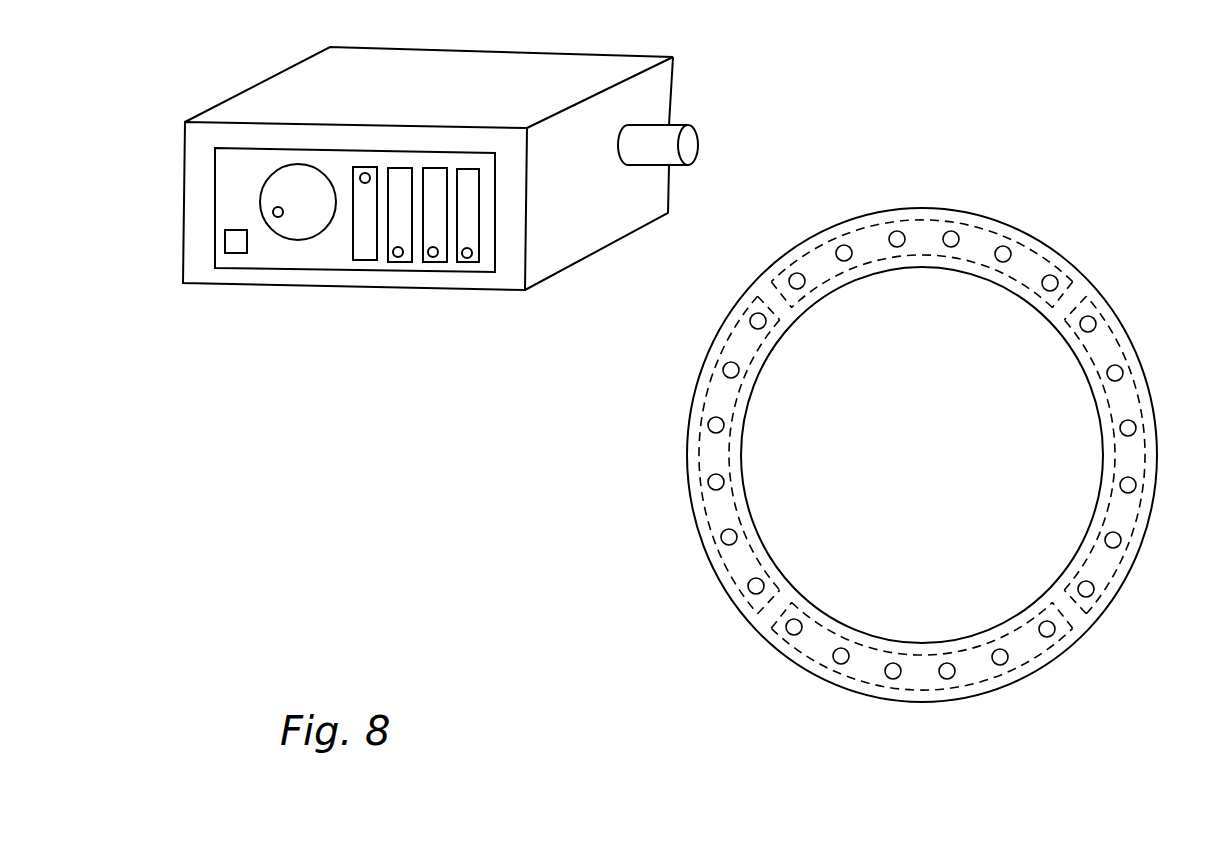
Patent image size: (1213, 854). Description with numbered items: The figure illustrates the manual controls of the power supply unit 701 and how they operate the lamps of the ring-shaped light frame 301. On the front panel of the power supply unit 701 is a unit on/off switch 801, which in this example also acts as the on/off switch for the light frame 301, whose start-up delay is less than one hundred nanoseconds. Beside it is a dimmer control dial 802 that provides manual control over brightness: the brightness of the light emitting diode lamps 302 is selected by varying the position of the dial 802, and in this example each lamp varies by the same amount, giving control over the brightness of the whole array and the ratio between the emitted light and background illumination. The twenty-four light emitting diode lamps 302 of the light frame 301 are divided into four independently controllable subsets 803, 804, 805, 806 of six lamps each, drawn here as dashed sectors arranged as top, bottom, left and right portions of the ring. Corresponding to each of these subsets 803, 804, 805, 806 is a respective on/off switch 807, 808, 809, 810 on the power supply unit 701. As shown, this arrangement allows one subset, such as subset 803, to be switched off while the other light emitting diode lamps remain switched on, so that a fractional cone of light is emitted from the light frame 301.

The power supply unit 701 is at (683, 72).
The unit on/off switch 801 is at (236, 253).
The dimmer control dial 802 is at (278, 217).
The on/off switch 807 is at (368, 173).
The on/off switch 808 is at (398, 257).
The on/off switch 809 is at (433, 257).
The on/off switch 810 is at (467, 258).
The light frame 301 is at (904, 417).
The light emitting diode lamp 302 is at (893, 233).
The subset of light emitting diode lamps 803 is at (1030, 263).
The subset of light emitting diode lamps 804 is at (1100, 578).
The subset of light emitting diode lamps 805 is at (810, 652).
The subset of light emitting diode lamps 806 is at (740, 570).